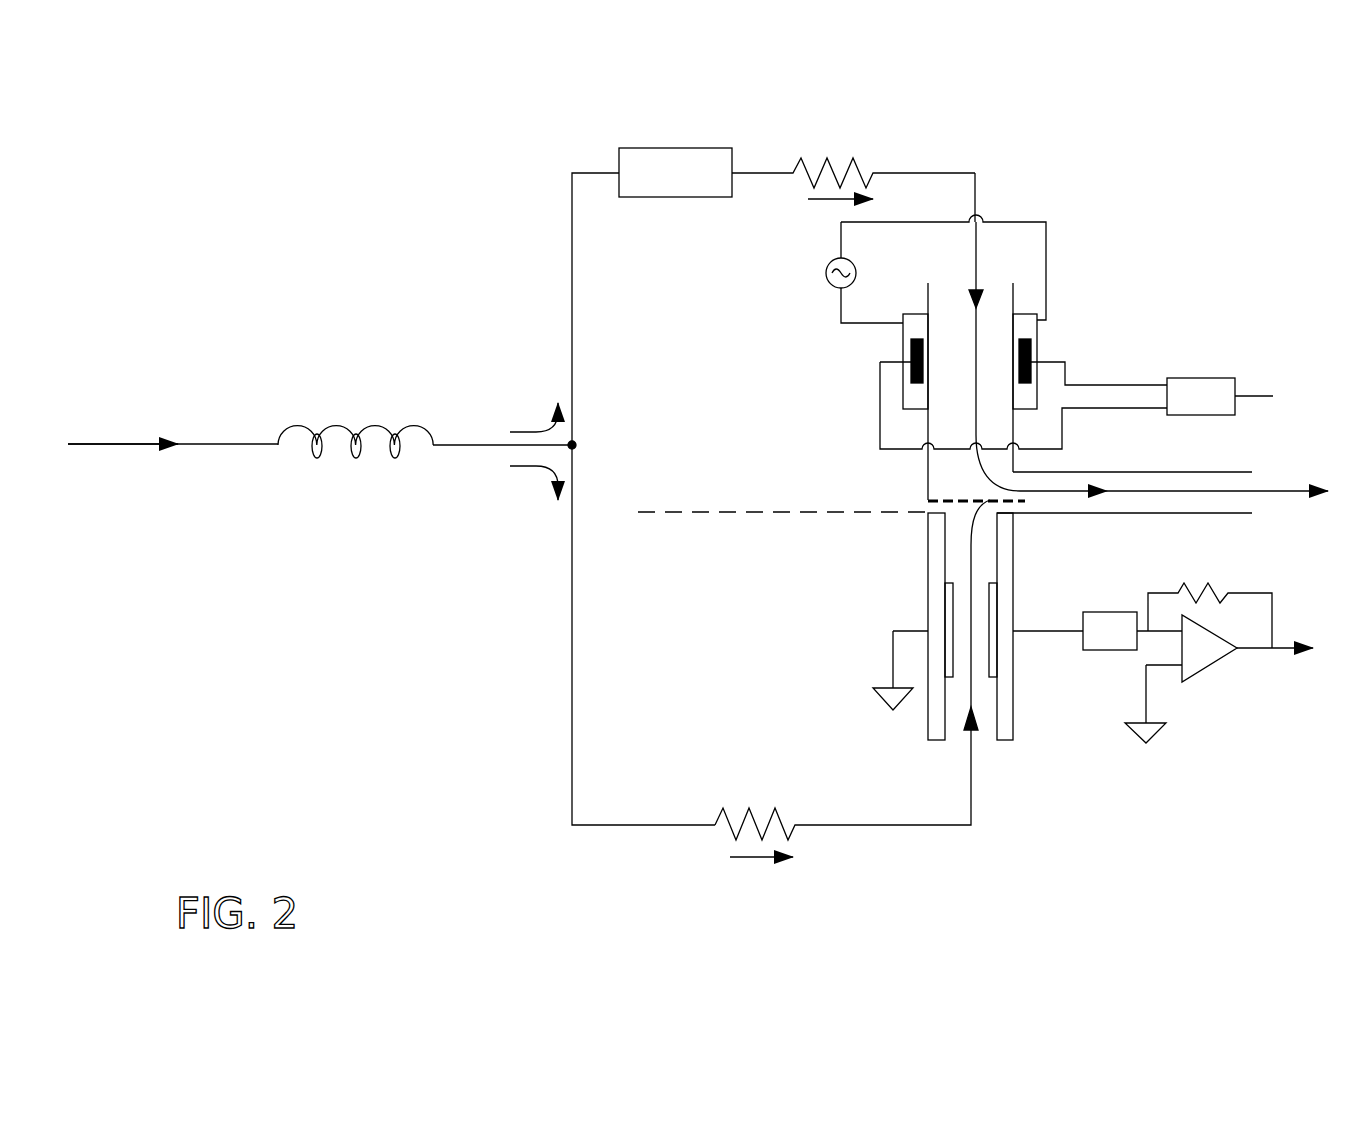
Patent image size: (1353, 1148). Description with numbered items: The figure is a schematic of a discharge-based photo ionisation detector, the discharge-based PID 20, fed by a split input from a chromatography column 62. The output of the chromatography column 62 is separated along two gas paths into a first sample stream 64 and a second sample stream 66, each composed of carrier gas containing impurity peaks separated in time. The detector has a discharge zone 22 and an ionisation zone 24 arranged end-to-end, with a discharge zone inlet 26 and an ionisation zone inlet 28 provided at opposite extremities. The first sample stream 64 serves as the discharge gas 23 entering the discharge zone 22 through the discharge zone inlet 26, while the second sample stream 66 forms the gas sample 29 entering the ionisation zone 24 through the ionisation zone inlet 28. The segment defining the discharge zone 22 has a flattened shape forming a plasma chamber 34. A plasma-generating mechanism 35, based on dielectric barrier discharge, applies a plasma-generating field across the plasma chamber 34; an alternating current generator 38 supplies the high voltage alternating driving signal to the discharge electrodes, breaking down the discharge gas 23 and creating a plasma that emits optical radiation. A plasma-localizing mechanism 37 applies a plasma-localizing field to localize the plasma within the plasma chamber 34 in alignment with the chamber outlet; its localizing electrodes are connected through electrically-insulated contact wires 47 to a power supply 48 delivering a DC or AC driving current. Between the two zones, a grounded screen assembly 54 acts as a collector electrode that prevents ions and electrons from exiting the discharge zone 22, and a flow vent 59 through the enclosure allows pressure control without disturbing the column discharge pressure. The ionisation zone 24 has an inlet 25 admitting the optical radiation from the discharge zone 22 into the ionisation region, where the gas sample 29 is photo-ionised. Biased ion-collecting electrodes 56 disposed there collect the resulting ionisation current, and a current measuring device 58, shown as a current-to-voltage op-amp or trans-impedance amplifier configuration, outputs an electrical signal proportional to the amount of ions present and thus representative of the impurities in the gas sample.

The discharge-based PID 20 is at (1064, 130).
The discharge zone 22 is at (907, 391).
The discharge gas 23 is at (976, 252).
The ionisation zone 24 is at (942, 635).
The inlet 25 is at (955, 545).
The discharge zone inlet 26 is at (988, 183).
The ionisation zone inlet 28 is at (983, 750).
The gas sample 29 is at (971, 620).
The plasma chamber 34 is at (937, 386).
The plasma-generating mechanism 35 is at (873, 357).
The plasma-localizing mechanism 37 is at (1288, 313).
The alternating current generator 38 is at (829, 265).
The electrically-insulated contact wires 47 is at (1115, 385).
The power supply 48 is at (1200, 378).
The screen assembly 54 is at (932, 497).
The ion-collecting electrodes 56 is at (993, 663).
The current measuring device 58 is at (1217, 688).
The flow vent 59 is at (1245, 483).
The chromatography column 62 is at (385, 422).
The first sample stream 64 is at (572, 268).
The second sample stream 66 is at (572, 680).